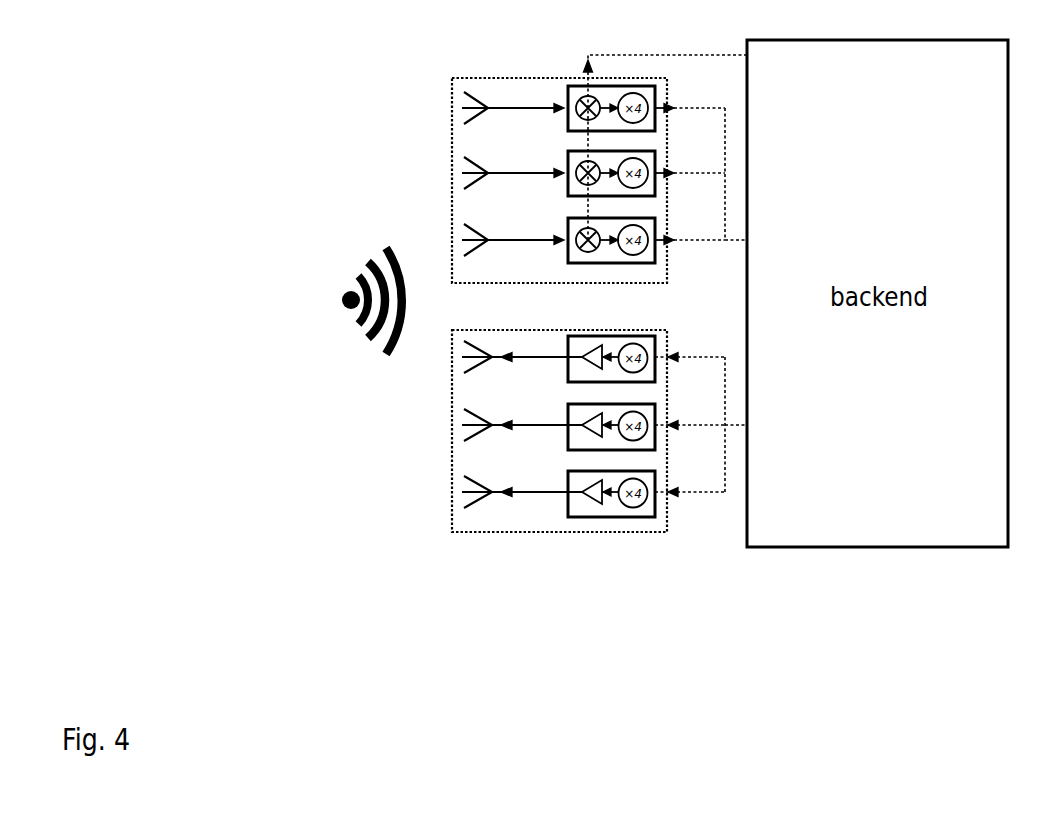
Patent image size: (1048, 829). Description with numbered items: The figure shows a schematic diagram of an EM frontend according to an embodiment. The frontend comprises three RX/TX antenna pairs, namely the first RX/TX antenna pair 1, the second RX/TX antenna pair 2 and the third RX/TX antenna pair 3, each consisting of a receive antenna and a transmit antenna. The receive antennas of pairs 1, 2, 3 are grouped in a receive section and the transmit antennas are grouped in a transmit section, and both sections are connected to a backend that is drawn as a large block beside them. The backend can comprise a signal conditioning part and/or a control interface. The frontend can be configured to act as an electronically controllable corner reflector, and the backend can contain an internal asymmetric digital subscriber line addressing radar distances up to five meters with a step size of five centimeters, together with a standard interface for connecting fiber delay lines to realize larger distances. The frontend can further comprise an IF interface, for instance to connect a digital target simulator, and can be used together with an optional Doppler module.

The first RX/TX antenna pair (Rx1, Tx1) 1 is at (593, 301).
The second RX/TX antenna pair (Rx2, Tx2) 2 is at (593, 300).
The third RX/TX antenna pair (Rx3, Tx3) 3 is at (593, 300).